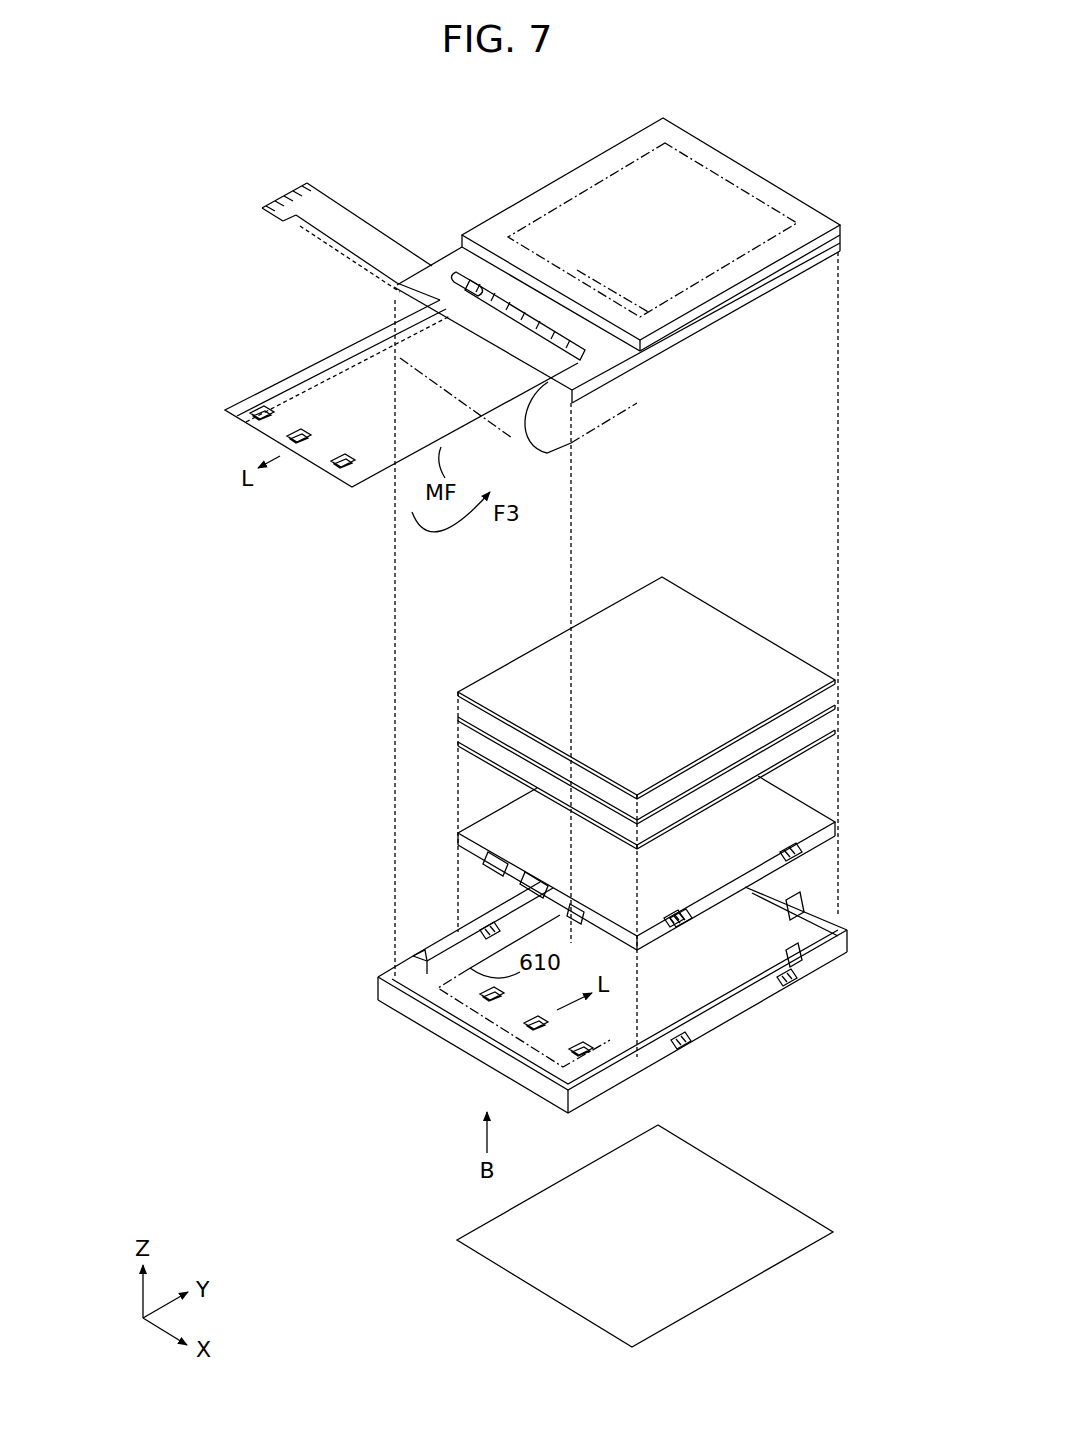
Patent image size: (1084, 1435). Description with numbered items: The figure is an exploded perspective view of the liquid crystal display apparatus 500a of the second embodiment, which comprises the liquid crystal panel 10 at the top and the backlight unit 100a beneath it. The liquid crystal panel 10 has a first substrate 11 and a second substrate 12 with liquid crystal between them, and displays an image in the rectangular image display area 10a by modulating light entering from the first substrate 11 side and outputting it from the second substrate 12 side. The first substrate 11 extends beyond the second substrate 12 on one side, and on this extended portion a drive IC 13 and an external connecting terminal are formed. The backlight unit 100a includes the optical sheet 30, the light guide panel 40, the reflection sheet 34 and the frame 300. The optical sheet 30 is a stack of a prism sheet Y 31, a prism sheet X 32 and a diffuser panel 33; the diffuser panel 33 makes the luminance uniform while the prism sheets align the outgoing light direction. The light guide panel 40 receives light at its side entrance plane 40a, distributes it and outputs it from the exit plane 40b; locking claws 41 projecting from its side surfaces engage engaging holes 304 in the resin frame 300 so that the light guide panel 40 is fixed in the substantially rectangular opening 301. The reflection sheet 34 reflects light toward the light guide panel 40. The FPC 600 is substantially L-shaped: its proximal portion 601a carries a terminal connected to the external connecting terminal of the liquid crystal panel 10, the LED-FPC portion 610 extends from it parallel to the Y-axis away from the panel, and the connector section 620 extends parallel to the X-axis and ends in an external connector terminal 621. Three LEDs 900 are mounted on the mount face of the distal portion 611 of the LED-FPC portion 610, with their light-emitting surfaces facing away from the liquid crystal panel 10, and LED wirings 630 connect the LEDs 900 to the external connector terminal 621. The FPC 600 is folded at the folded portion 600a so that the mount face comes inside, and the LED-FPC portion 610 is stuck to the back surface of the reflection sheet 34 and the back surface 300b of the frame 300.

The liquid crystal panel 10 is at (540, 326).
The image display area 10a is at (605, 175).
The first substrate 11 is at (842, 246).
The second substrate 12 is at (843, 227).
The drive IC 13 is at (617, 343).
The optical sheet 30 is at (567, 713).
The prism sheet Y 31 is at (456, 692).
The prism sheet X 32 is at (456, 717).
The diffuser panel 33 is at (456, 742).
The reflection sheet 34 is at (497, 1210).
The light guide panel 40 is at (581, 863).
The entrance plane 40a is at (487, 852).
The exit plane 40b is at (757, 826).
The locking claws 41 is at (793, 853).
The backlight unit 100a is at (262, 1224).
The frame 300 is at (569, 997).
The back surface 300b is at (453, 1050).
The opening 301 is at (692, 983).
The engaging holes 304 is at (797, 982).
The liquid crystal display apparatus 500a is at (168, 797).
The FPC 600 is at (402, 387).
The folded portion 600a is at (452, 415).
The proximal portion 601a is at (457, 273).
The LED-FPC portion 610 is at (366, 462).
The distal portion 611 is at (275, 444).
The connector section 620 is at (323, 225).
The external connector terminal 621 is at (275, 226).
The LED wirings 630 is at (314, 378).
The LEDs 900 is at (258, 410).